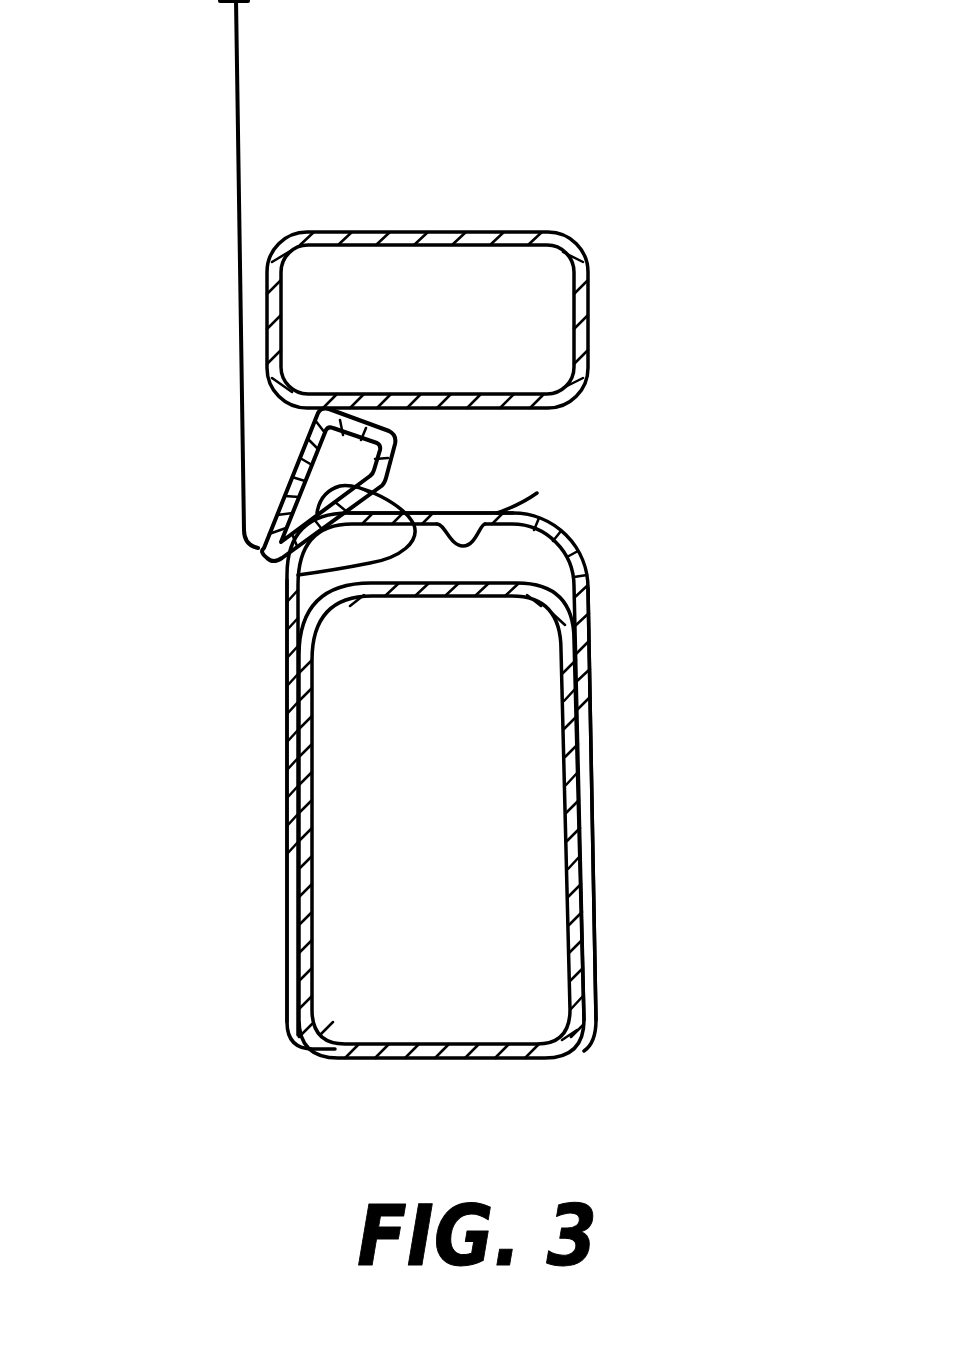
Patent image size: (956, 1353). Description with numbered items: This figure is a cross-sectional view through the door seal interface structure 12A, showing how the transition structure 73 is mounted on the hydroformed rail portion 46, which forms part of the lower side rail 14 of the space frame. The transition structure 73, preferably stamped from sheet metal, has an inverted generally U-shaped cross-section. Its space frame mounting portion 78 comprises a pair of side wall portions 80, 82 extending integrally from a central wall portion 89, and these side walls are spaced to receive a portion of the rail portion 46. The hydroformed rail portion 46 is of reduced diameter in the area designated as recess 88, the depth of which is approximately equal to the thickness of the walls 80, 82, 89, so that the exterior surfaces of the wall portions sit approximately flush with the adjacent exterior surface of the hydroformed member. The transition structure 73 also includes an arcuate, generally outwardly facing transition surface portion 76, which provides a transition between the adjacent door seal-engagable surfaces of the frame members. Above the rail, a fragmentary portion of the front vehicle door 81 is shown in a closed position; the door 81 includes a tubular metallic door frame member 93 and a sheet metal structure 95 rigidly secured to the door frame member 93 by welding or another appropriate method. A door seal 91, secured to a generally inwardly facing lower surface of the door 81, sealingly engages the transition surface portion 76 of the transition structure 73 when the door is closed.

The sheet metal structure 95 is at (242, 375).
The front vehicle door 81 is at (266, 131).
The tubular metallic door frame member 93 is at (588, 312).
The door seal 91 is at (377, 490).
The transition surface portion 76 is at (268, 530).
The central wall portion 89 is at (298, 575).
The transition structure 73 is at (575, 540).
The side wall portion 82 is at (588, 637).
The side wall portion 80 is at (287, 735).
The door seal interface structure 12A is at (610, 752).
The space frame mounting portion 78 is at (581, 785).
The hydroformed recess 88 is at (590, 868).
The hydroformed rail portion 46 is at (578, 942).
The lower side rail 14 is at (587, 1061).